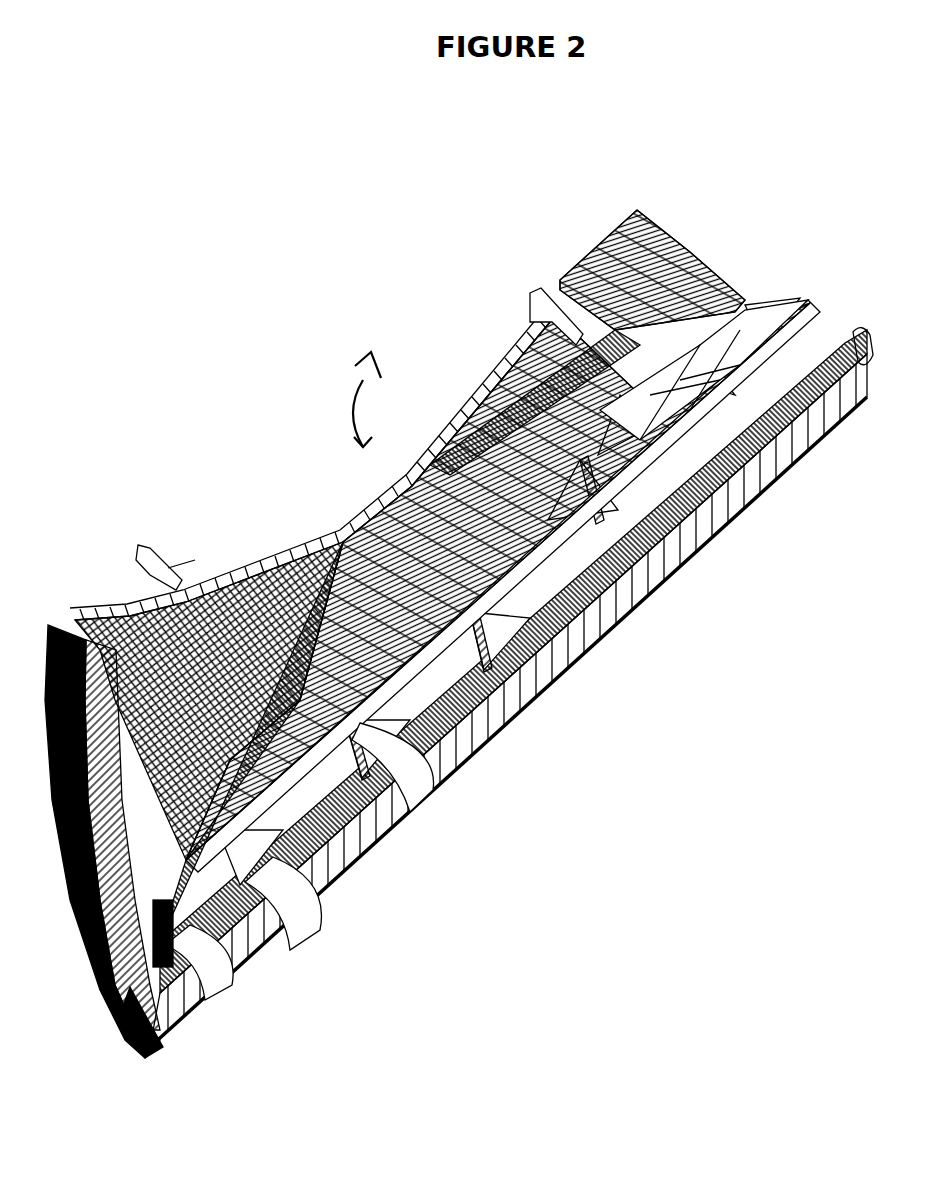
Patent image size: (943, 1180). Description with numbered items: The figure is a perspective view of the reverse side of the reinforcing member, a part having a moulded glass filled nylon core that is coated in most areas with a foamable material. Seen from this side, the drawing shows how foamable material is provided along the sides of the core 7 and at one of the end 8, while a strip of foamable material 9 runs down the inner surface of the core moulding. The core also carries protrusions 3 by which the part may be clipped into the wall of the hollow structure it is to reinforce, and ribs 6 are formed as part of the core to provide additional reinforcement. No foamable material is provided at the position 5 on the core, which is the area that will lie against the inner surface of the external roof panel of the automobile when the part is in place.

The protrusions 3 is at (527, 273).
The position on the core 5 is at (663, 232).
The ribs 6 is at (703, 497).
The sides of the core 7 is at (672, 578).
The end of the core 8 is at (46, 640).
The strip of foamable material 9 is at (318, 703).